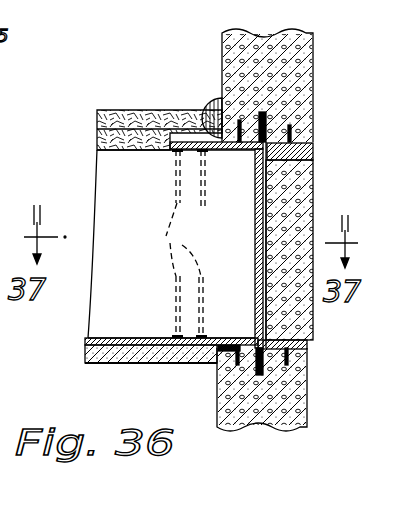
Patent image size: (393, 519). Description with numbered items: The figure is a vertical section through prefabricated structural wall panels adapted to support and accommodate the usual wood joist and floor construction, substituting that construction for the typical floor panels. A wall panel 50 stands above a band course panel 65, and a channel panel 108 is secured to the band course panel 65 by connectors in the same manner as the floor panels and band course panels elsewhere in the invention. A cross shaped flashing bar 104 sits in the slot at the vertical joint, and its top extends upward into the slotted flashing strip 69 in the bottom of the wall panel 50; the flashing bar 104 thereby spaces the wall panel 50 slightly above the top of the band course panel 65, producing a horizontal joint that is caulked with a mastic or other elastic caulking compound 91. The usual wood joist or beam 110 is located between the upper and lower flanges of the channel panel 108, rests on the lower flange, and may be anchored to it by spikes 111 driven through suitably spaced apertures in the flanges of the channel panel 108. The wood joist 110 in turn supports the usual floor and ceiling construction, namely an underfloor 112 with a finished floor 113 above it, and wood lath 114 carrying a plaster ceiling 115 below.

The wall panel 50 is at (278, 58).
The slotted flashing strip 69 is at (268, 110).
The caulking compound 91 is at (215, 138).
The flashing bar 104 is at (290, 157).
The channel panel 108 is at (262, 210).
The band course panel 65 is at (310, 333).
The wood joist 110 is at (100, 310).
The spike 111 is at (197, 207).
The underfloor 112 is at (112, 135).
The finished floor 113 is at (97, 115).
The wood lath 114 is at (85, 344).
The plaster ceiling 115 is at (145, 353).